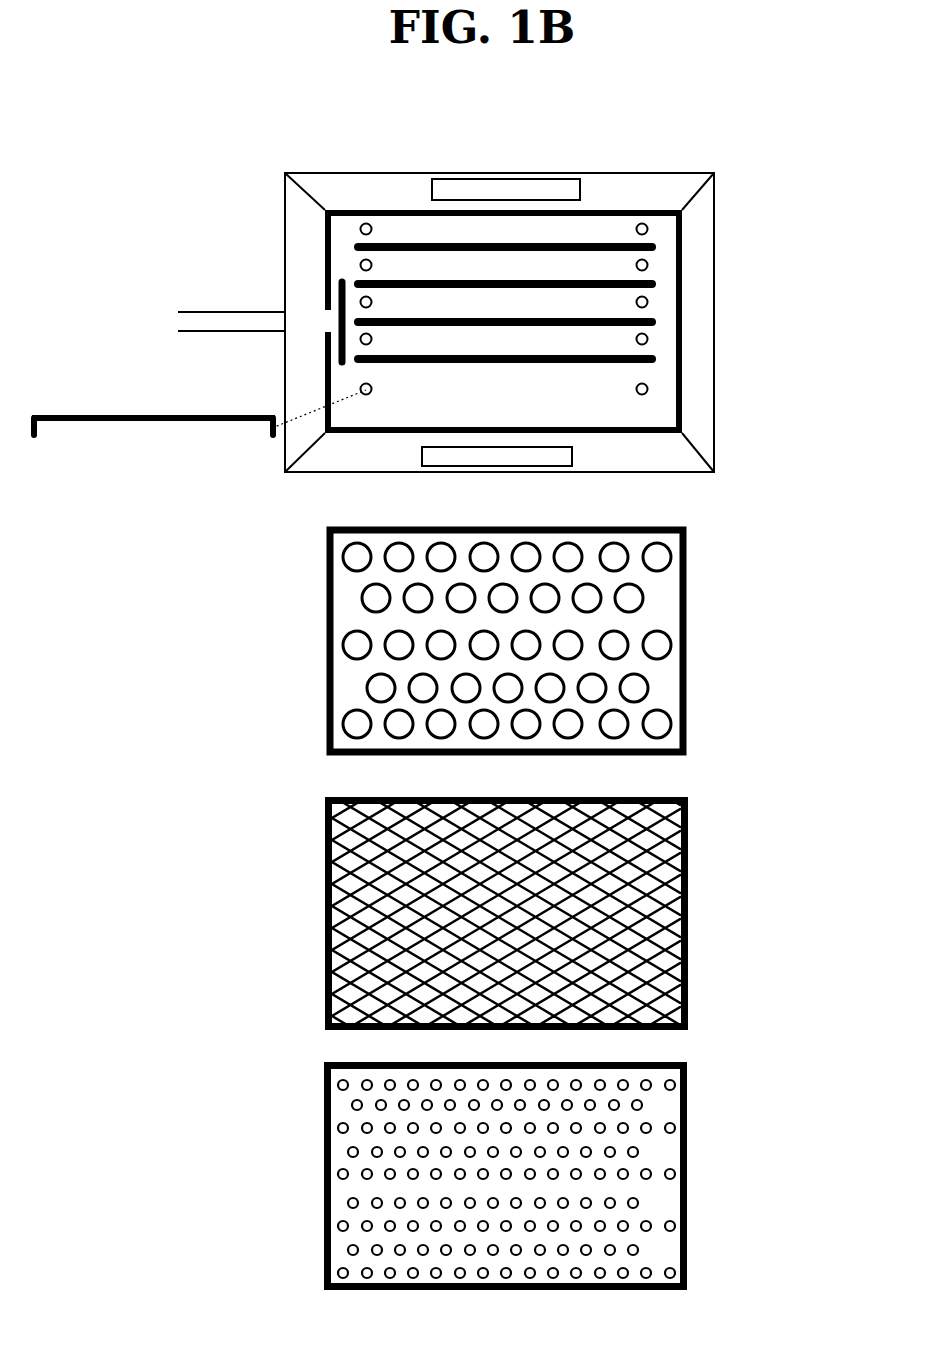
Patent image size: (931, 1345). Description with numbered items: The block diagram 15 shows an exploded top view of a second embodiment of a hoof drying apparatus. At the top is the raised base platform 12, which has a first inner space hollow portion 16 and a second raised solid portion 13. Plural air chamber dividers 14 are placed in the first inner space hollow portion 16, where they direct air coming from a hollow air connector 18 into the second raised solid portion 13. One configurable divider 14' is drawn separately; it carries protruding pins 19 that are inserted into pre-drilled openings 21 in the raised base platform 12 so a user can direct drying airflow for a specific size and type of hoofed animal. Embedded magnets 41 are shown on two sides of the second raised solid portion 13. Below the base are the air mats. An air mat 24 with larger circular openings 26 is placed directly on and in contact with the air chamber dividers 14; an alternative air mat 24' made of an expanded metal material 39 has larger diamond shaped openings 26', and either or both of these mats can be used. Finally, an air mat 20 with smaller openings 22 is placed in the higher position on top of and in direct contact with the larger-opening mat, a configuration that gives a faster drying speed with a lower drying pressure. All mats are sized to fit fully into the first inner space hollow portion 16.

The raised base platform 12 is at (500, 173).
The second raised solid portion 13 is at (713, 175).
The air chamber dividers 14 is at (584, 319).
The configurable air chamber divider 14' is at (199, 397).
The block diagram 15 is at (673, 96).
The first inner space hollow portion 16 is at (660, 266).
The hollow air connector 18 is at (240, 311).
The protruding pins 19 is at (272, 432).
The air mat with smaller openings 20 is at (680, 1062).
The pre-drilled openings 21 is at (368, 393).
The openings of a first size 22 is at (650, 1278).
The air mat with larger openings 24 is at (556, 635).
The air mat with diamond shaped openings 24' is at (554, 906).
The openings of a second size 26 is at (563, 640).
The diamond shaped openings 26' is at (559, 846).
The expanded metal material 39 is at (325, 912).
The embedded magnets 41 is at (497, 466).